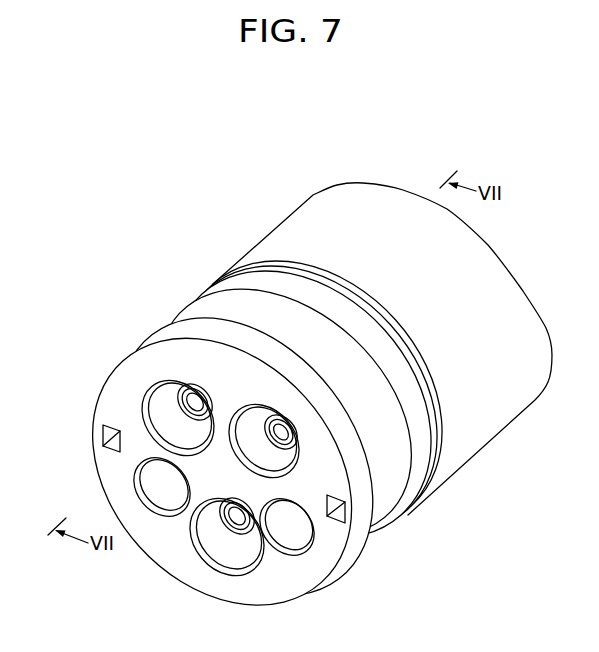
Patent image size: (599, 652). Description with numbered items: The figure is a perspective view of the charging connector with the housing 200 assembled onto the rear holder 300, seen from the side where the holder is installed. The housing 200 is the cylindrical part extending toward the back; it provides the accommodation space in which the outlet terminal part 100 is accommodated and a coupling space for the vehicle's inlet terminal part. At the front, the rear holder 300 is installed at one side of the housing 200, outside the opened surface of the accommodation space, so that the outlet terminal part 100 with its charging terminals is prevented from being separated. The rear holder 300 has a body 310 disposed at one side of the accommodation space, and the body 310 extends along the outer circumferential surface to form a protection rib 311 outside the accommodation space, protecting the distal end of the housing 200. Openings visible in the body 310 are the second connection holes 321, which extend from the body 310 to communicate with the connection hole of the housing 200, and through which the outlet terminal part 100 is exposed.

The outlet terminal part 100 is at (222, 540).
The housing 200 is at (313, 180).
The rear holder 300 is at (115, 348).
The body 310 is at (116, 406).
The protection rib 311 is at (205, 330).
The second connection hole 321 is at (184, 438).